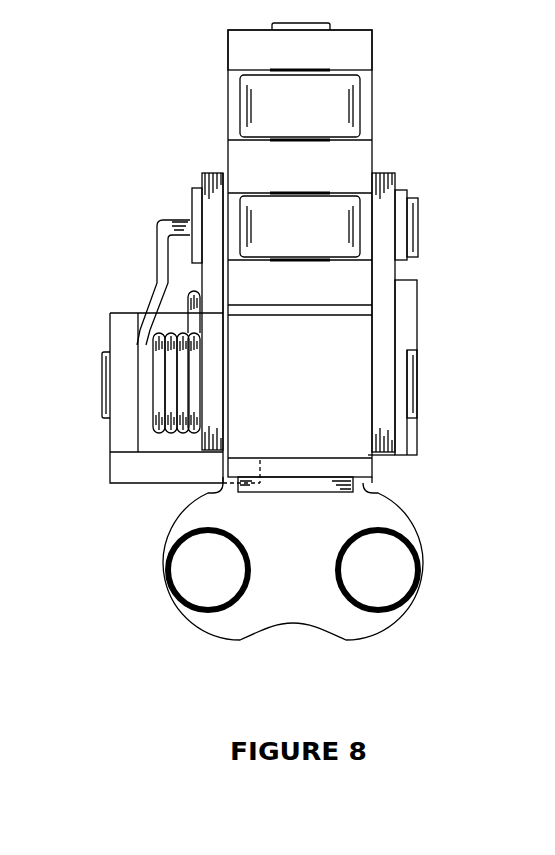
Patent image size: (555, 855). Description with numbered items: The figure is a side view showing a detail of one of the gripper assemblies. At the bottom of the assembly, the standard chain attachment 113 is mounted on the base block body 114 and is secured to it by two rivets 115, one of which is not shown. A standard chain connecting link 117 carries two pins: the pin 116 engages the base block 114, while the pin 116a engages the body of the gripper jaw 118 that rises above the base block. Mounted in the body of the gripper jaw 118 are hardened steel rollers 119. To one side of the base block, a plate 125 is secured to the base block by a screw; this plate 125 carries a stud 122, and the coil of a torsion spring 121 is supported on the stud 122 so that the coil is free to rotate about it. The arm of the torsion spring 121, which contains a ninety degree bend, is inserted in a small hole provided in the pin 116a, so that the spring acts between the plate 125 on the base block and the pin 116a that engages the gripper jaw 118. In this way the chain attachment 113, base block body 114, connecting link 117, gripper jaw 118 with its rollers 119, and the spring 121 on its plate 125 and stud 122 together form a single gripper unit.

The standard chain attachment 113 is at (118, 565).
The base block body 114 is at (352, 338).
The rivets 115 is at (287, 504).
The pin 116 is at (430, 385).
The pin 116a is at (430, 225).
The standard chain connecting link 117 is at (190, 180).
The gripper jaw 118 is at (382, 50).
The hardened steel rollers 119 is at (372, 108).
The torsion spring 121 is at (147, 250).
The stud 122 is at (92, 369).
The plate 125 is at (108, 435).